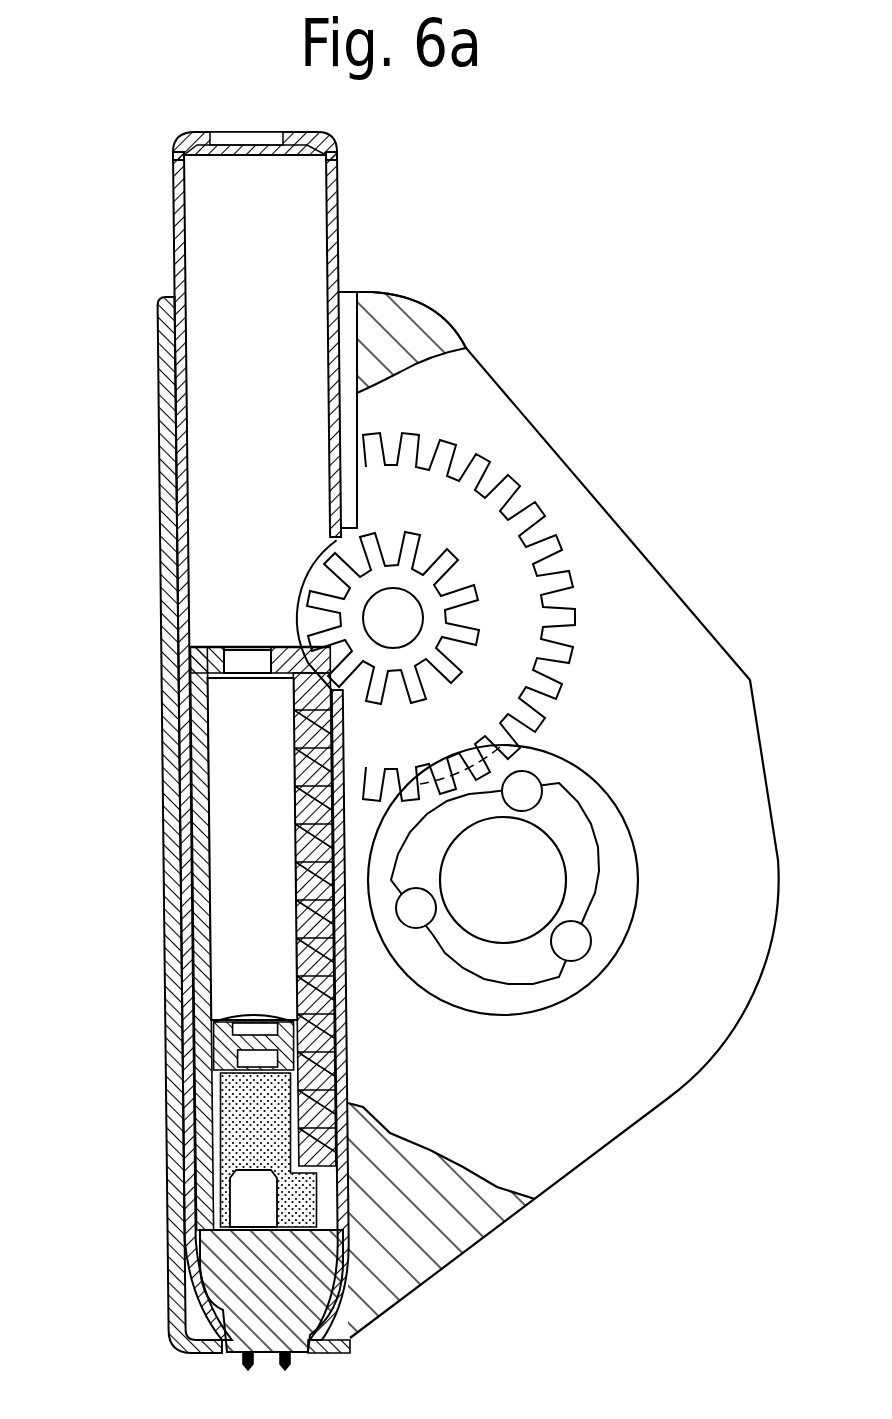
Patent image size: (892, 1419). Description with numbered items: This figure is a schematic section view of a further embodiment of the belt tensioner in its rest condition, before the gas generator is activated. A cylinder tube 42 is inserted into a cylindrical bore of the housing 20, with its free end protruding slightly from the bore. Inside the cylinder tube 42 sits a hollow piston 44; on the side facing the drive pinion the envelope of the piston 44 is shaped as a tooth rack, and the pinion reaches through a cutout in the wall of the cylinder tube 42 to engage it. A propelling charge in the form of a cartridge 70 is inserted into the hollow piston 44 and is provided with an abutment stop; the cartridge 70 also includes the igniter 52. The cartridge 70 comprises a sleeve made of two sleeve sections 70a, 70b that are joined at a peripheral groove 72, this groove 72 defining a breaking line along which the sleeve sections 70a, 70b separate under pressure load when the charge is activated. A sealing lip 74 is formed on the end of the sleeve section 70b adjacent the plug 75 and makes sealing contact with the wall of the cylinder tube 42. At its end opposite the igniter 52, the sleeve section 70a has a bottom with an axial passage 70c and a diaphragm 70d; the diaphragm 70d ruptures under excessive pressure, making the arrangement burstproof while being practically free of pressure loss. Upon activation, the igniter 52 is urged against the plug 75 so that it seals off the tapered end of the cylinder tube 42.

The housing 20 is at (612, 1098).
The cylinder tube 42 is at (175, 207).
The piston 44 is at (188, 793).
The igniter 52 is at (237, 1198).
The cartridge 70 is at (205, 1090).
The sleeve section 70a is at (318, 1082).
The sleeve section 70b is at (397, 1135).
The axial passage 70c is at (262, 1018).
The diaphragm 70d is at (228, 1043).
The peripheral groove 72 is at (235, 1132).
The sealing lip 74 is at (217, 1235).
The plug 75 is at (223, 1295).